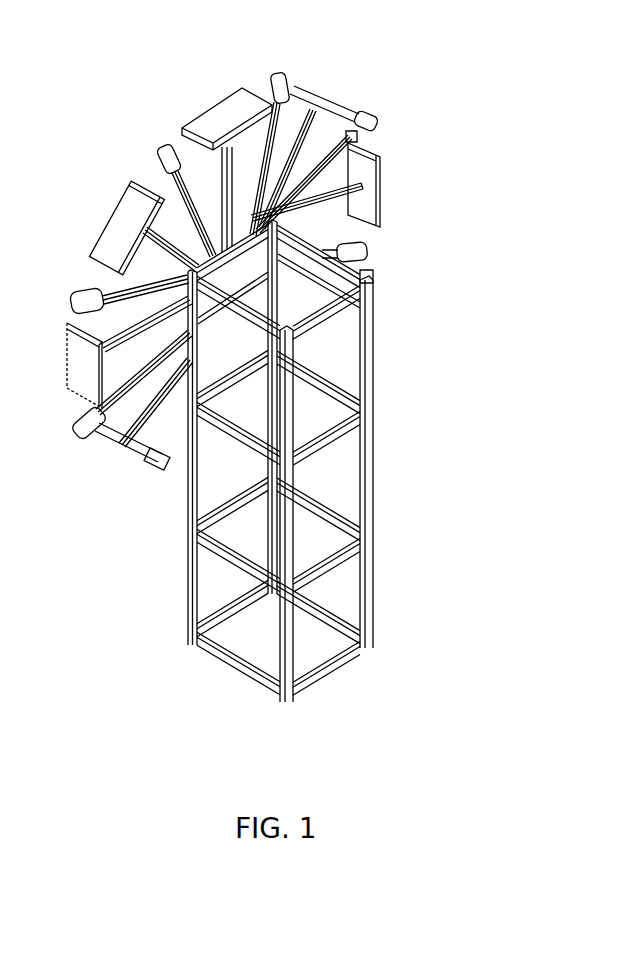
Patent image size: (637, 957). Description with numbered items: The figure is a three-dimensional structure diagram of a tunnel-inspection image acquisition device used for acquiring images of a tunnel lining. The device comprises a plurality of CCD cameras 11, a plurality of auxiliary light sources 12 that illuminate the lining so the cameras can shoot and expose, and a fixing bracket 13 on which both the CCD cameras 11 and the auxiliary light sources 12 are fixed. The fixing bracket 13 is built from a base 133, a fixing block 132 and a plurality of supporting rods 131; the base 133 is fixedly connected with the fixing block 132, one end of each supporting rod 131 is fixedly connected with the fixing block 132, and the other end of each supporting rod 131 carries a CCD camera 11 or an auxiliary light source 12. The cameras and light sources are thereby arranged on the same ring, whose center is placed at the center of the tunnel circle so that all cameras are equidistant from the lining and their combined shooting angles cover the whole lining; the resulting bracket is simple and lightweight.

The CCD camera 11 is at (158, 150).
The auxiliary light source 12 is at (112, 216).
The fixing bracket 13 is at (455, 257).
The supporting rod 131 is at (360, 215).
The fixing block 132 is at (374, 282).
The base 133 is at (370, 345).